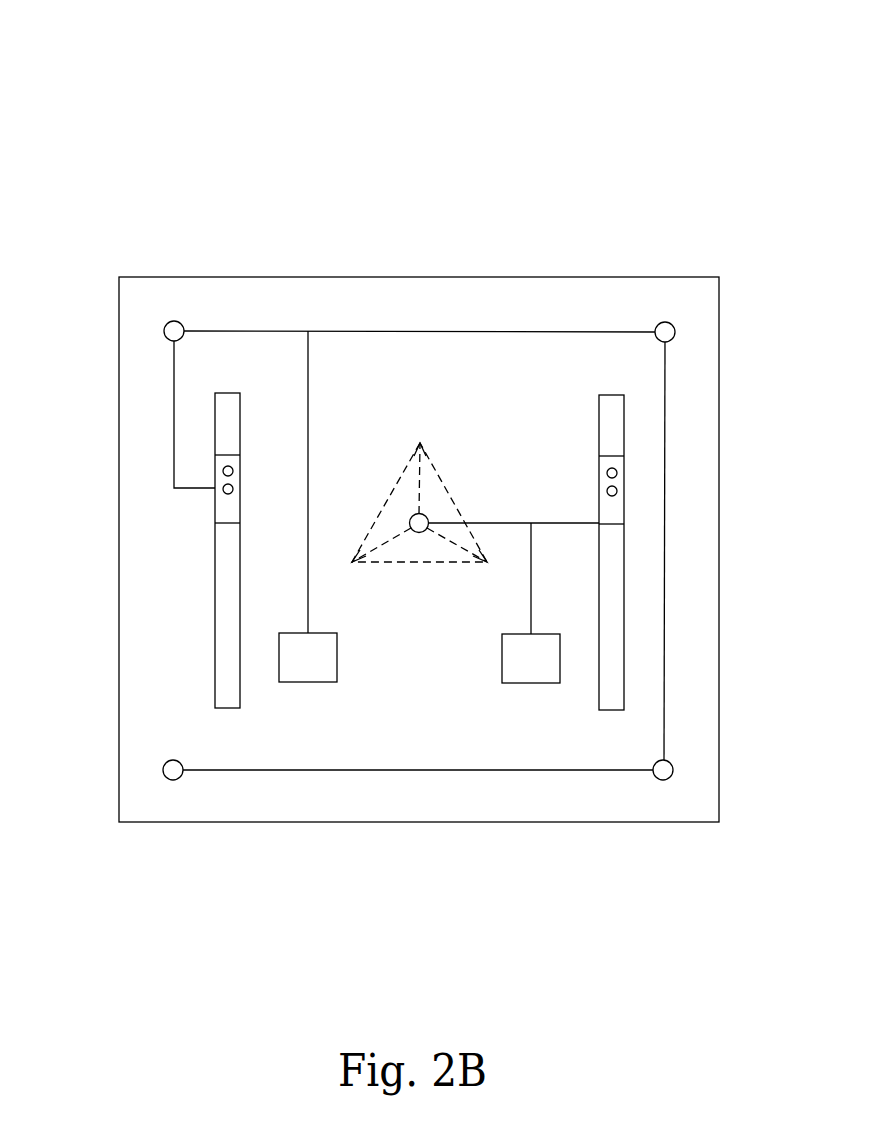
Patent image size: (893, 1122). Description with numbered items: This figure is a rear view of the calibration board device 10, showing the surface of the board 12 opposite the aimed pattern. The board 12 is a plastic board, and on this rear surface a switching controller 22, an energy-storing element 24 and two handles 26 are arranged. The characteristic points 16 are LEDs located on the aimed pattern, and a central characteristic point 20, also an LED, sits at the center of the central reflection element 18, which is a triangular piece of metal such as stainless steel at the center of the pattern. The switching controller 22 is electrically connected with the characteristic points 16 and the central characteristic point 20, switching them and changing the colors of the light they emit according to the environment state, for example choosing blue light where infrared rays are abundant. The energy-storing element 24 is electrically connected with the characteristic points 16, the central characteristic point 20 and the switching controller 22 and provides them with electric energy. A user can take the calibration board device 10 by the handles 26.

The calibration board device 10 is at (322, 157).
The board 12 is at (510, 277).
The characteristic points 16 is at (178, 322).
The central reflection element 18 is at (419, 563).
The central characteristic point 20 is at (428, 515).
The switching controller 22 is at (223, 508).
The energy-storing element 24 is at (315, 666).
The handles 26 is at (225, 645).